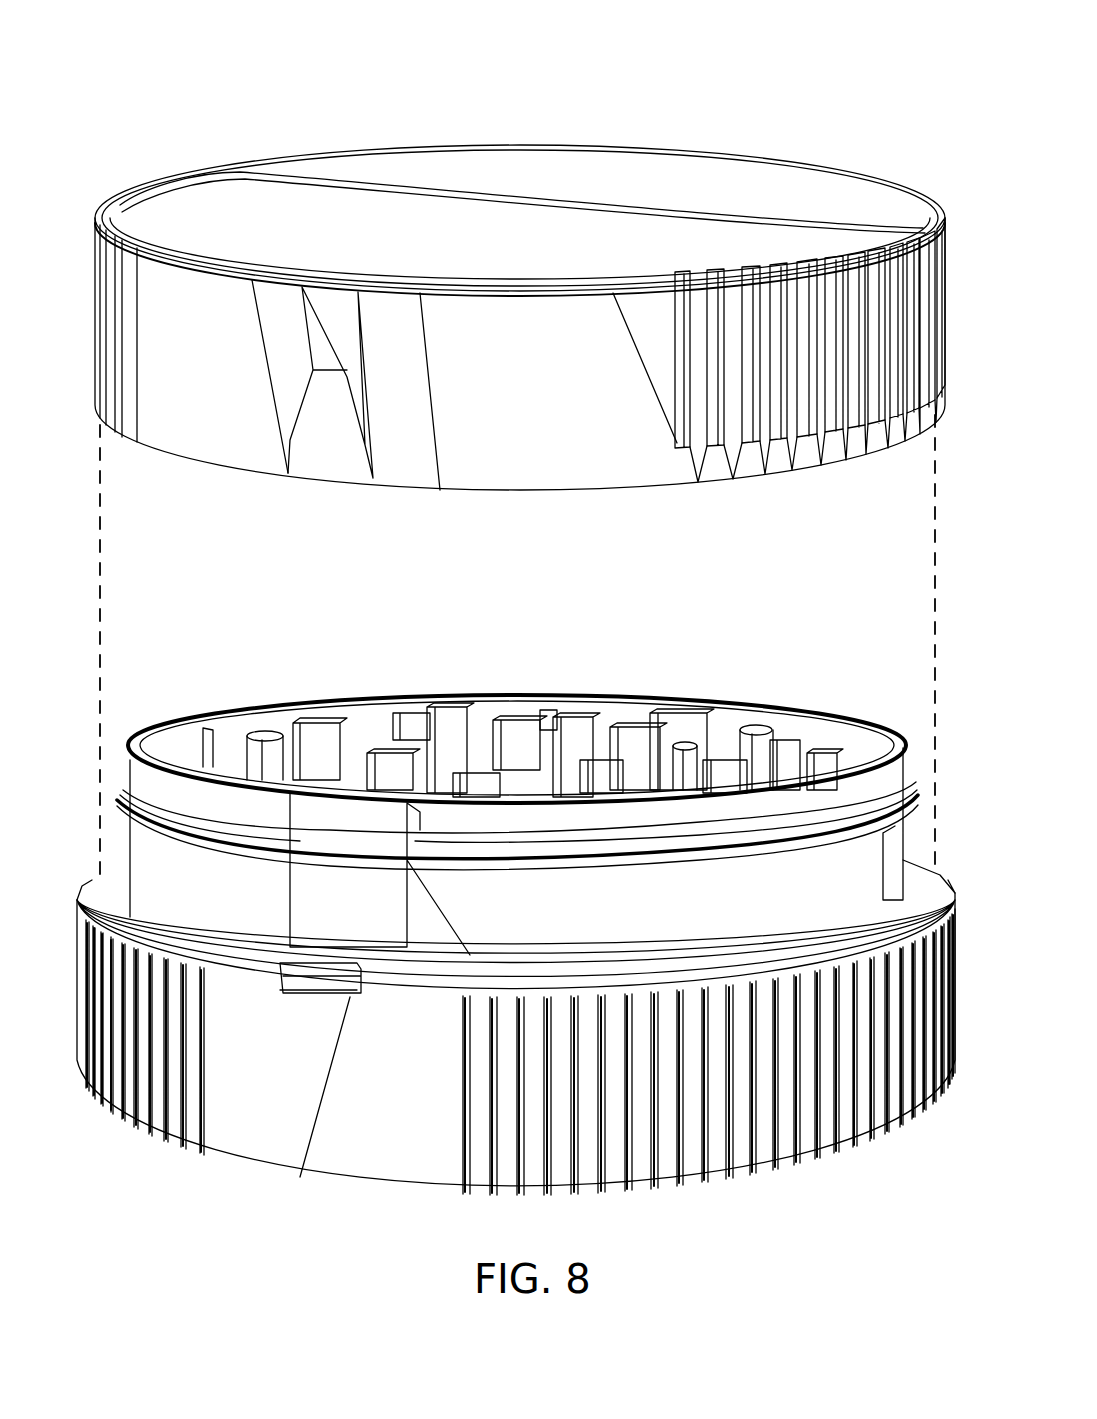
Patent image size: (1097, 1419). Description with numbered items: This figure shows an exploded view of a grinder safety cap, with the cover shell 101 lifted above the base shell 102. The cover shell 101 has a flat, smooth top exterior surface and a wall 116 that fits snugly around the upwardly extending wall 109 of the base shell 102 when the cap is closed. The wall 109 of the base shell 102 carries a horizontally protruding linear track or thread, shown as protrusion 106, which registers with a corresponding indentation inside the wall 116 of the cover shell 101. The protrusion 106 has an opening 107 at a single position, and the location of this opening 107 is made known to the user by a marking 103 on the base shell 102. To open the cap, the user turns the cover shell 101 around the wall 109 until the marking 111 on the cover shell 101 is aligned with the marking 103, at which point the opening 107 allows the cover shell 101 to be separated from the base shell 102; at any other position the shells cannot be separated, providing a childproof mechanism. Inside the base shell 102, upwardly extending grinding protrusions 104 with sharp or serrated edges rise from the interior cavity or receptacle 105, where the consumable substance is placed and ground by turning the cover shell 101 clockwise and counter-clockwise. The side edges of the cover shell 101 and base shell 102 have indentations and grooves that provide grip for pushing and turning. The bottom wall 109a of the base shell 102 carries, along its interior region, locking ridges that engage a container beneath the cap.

The cover shell 101 is at (520, 288).
The base shell 102 is at (498, 951).
The marking 103 is at (300, 978).
The grinding protrusions 104 is at (635, 740).
The interior cavity or receptacle 105 is at (480, 783).
The protrusion, track and/or thread 106 is at (115, 808).
The opening 107 is at (377, 827).
The upwardly extending wall 109 is at (230, 717).
The bottom wall 109a is at (638, 1190).
The marking 111 is at (325, 440).
The wall 116 is at (675, 485).